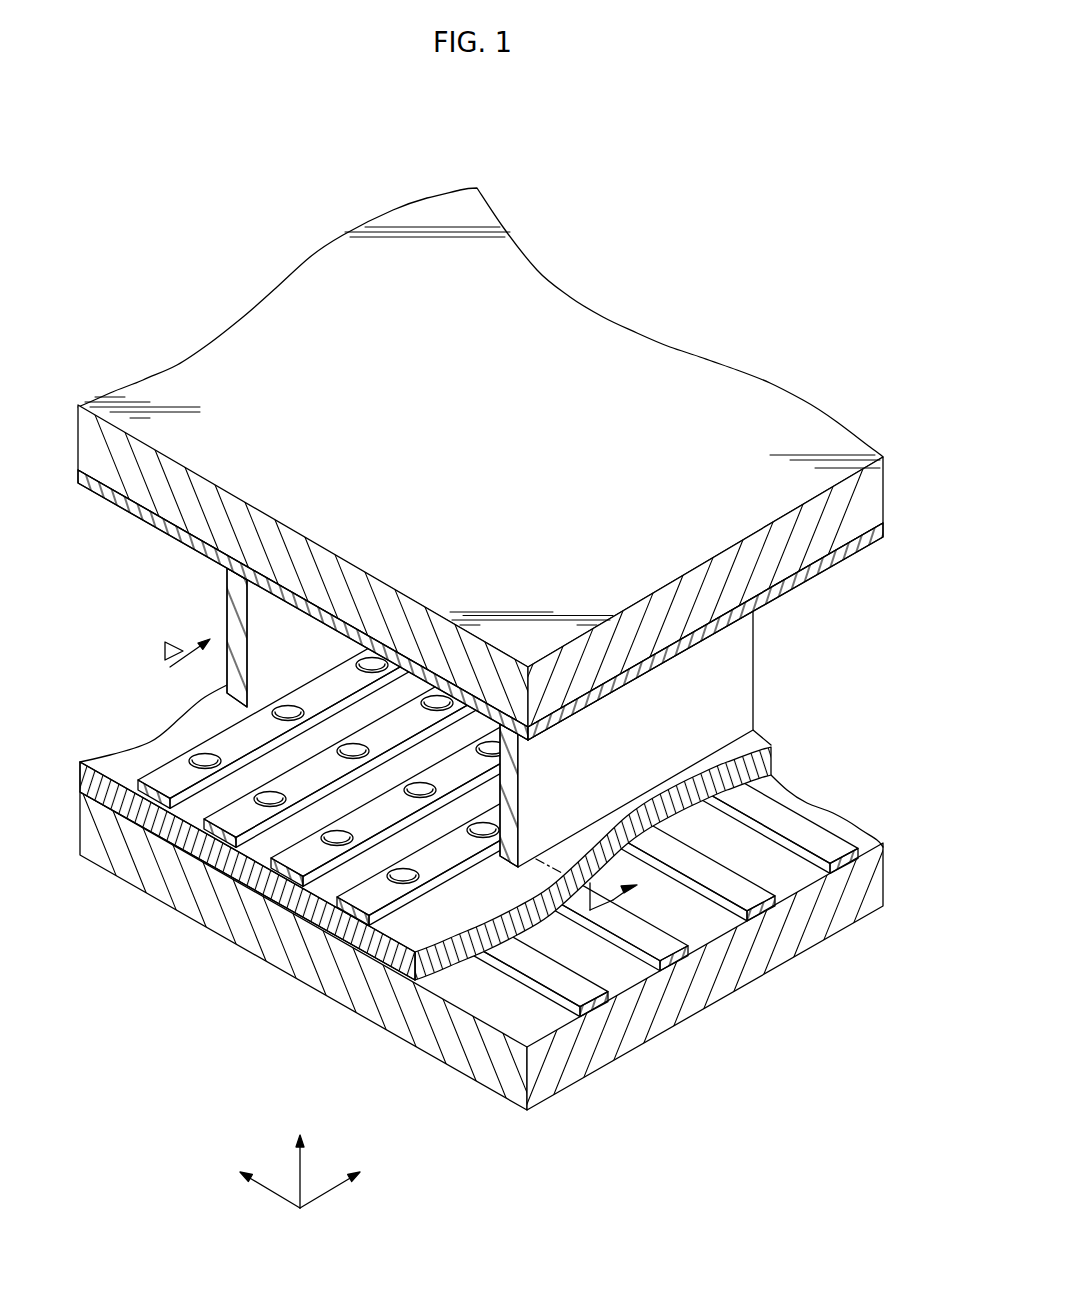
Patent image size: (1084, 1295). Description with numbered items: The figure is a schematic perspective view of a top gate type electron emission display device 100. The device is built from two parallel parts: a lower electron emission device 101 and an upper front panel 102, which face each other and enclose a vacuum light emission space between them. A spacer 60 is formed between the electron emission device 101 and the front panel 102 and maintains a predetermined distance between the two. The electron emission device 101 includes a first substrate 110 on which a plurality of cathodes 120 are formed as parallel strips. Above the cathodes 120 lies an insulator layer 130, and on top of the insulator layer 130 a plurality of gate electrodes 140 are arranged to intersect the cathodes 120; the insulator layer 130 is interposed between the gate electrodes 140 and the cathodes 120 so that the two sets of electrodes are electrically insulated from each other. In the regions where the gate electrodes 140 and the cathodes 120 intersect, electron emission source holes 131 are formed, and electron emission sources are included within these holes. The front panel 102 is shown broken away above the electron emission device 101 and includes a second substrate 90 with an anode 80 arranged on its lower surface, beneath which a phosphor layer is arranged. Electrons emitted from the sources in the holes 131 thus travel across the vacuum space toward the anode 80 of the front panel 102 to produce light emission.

The top gate type electron emission display device 100 is at (157, 301).
The electron emission device 101 is at (483, 840).
The front panel 102 is at (484, 472).
The spacer 60 is at (742, 689).
The anode 80 is at (798, 585).
The second substrate 90 is at (833, 535).
The first substrate 110 is at (428, 1018).
The cathodes 120 is at (679, 960).
The insulator layer 130 is at (377, 948).
The electron emission source holes 131 is at (328, 825).
The gate electrodes 140 is at (463, 782).